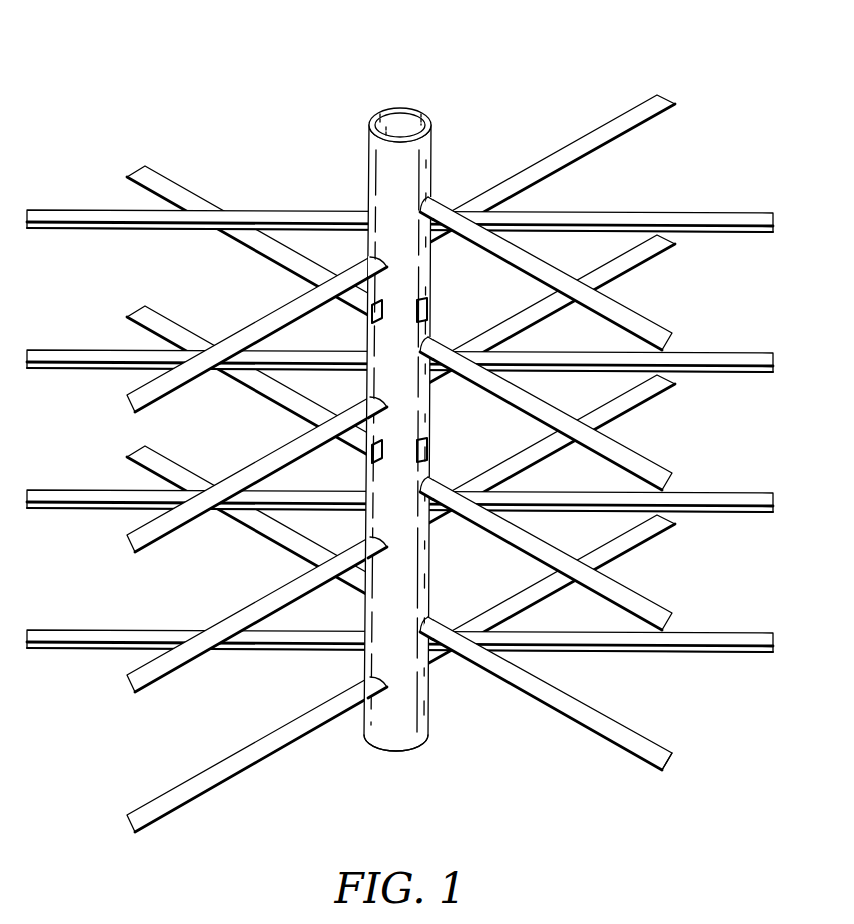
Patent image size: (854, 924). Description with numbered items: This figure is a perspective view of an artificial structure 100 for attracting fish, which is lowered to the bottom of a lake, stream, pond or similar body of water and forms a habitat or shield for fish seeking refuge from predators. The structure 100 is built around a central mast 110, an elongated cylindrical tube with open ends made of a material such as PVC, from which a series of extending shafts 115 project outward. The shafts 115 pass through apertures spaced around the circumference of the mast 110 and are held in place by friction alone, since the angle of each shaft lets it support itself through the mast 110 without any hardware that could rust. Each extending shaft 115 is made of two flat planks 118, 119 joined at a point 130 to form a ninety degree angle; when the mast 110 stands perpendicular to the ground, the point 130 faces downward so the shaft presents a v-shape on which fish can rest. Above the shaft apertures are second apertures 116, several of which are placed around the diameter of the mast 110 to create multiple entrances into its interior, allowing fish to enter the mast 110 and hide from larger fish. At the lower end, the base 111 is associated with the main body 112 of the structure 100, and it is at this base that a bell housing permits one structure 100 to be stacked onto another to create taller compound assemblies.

The artificial structure 100 is at (400, 454).
The central mast 110 is at (429, 468).
The base 111 is at (407, 752).
The main body 112 is at (408, 725).
The extending shafts 115 is at (637, 212).
The second aperture 116 is at (427, 309).
The flat plank 118 is at (627, 740).
The flat plank 119 is at (130, 806).
The point 130 is at (661, 772).